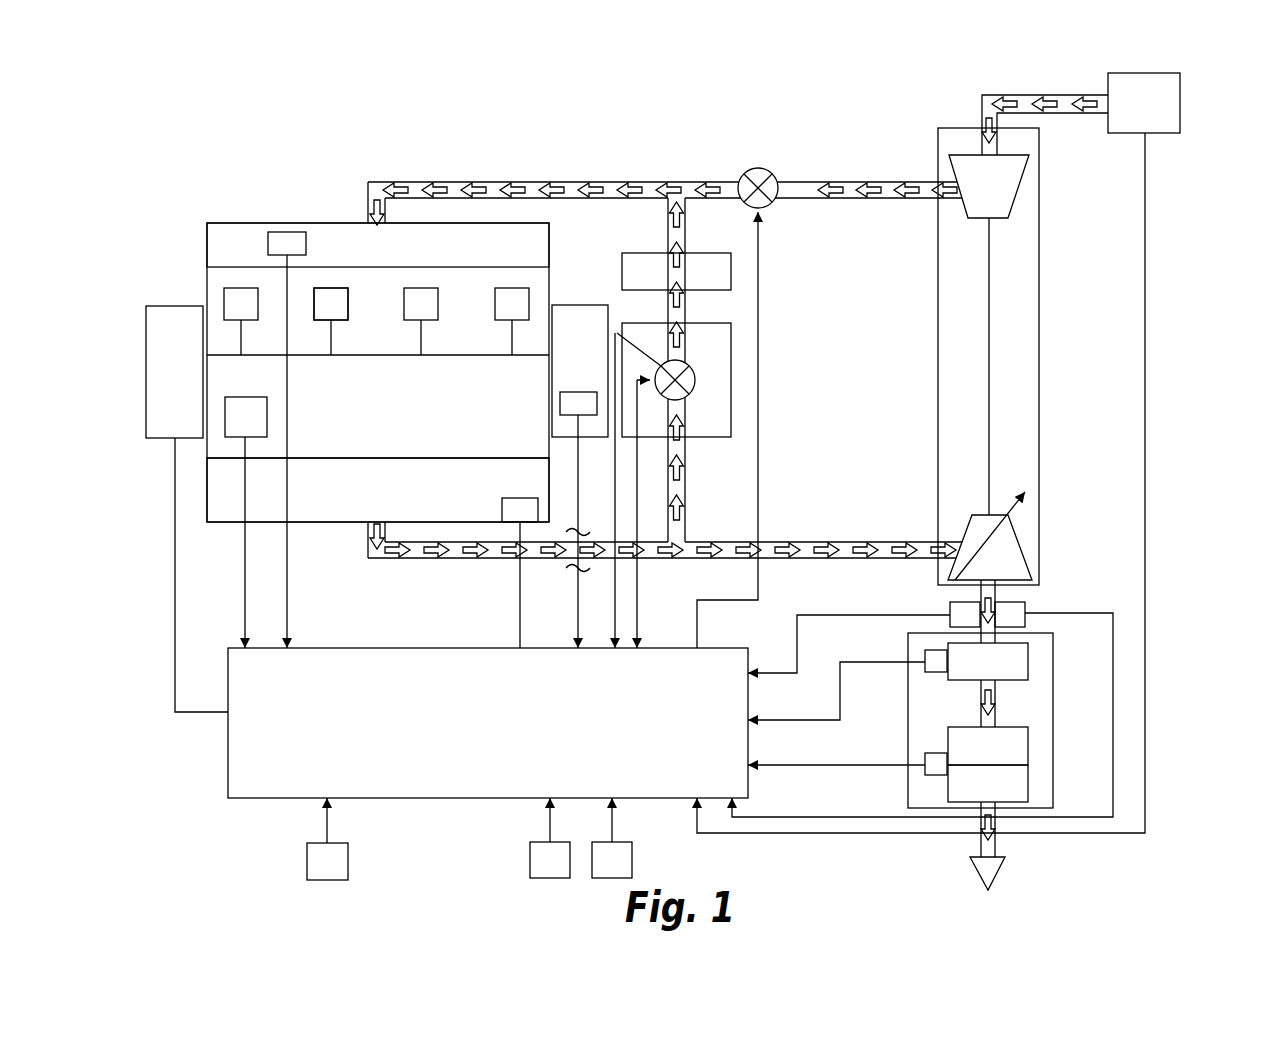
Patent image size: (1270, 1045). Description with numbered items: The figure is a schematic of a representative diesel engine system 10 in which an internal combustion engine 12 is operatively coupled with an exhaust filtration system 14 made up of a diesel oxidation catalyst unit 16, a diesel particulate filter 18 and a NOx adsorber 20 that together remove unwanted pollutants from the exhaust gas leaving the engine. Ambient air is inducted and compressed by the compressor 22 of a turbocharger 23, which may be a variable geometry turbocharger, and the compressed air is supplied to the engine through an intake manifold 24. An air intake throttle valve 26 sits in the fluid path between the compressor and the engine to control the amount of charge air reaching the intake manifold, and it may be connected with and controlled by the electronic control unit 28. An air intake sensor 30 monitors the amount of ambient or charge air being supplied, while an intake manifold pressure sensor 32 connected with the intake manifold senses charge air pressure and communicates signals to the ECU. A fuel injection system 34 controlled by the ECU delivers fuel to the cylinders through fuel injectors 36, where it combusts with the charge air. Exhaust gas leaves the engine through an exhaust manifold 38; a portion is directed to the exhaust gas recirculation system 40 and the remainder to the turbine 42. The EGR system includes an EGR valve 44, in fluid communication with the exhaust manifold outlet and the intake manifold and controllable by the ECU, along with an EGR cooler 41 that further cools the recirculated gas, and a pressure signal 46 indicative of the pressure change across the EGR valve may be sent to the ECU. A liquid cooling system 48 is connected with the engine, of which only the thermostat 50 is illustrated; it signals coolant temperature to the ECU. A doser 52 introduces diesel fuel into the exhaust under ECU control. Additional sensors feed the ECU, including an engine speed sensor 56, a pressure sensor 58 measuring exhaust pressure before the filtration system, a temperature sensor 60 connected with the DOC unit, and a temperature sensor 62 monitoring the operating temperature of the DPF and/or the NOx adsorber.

The system 10 is at (573, 147).
The internal combustion engine 12 is at (383, 436).
The exhaust filtration system 14 is at (1053, 690).
The diesel oxidation catalyst unit 16 is at (1028, 662).
The diesel particulate filter 18 is at (1028, 745).
The NOx adsorber 20 is at (1028, 783).
The compressor 22 is at (1003, 185).
The turbocharger 23 is at (938, 343).
The intake manifold 24 is at (240, 233).
The air intake throttle valve 26 is at (745, 170).
The electronic control unit 28 is at (370, 648).
The air intake sensor 30 is at (1180, 104).
The intake manifold pressure sensor 32 is at (297, 232).
The fuel injection system 34 is at (163, 306).
The fuel injector 36 is at (350, 307).
The exhaust manifold 38 is at (228, 497).
The exhaust gas recirculation system 40 is at (731, 408).
The EGR cooler 41 is at (633, 253).
The turbine 42 is at (1008, 550).
The EGR valve 44 is at (697, 373).
The pressure signal 46 is at (612, 467).
The cooling system 48 is at (568, 305).
The thermostat 50 is at (560, 396).
The doser 52 is at (510, 498).
The engine speed sensor 56 is at (233, 397).
The pressure sensor 58 is at (950, 610).
The temperature sensor 60 is at (935, 672).
The temperature sensor 62 is at (935, 775).